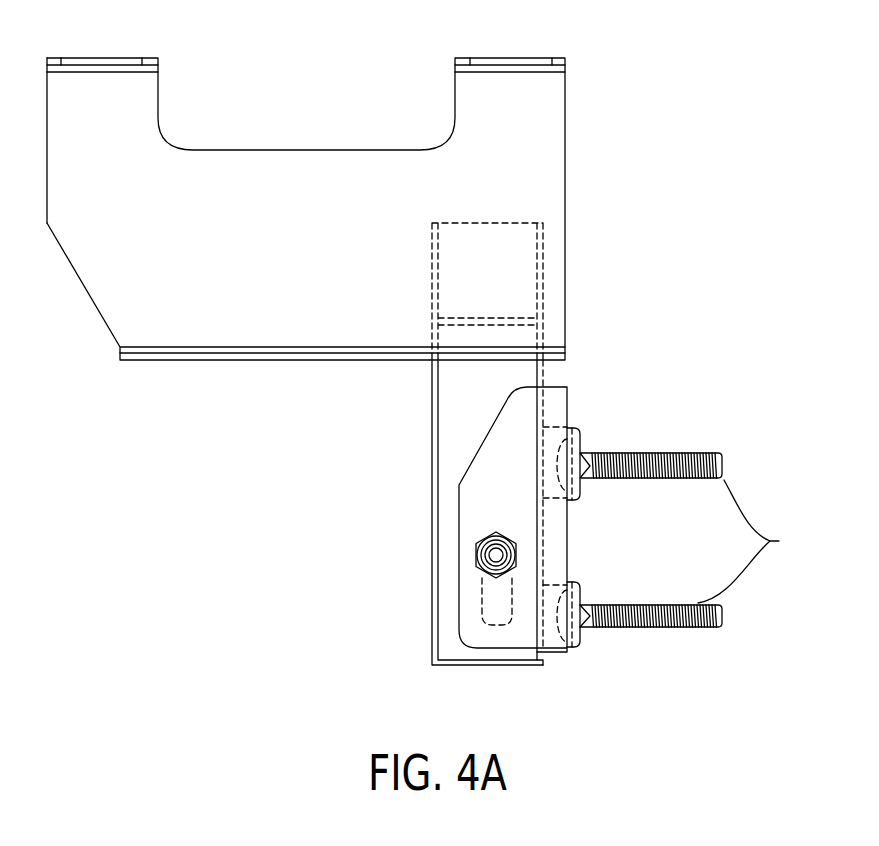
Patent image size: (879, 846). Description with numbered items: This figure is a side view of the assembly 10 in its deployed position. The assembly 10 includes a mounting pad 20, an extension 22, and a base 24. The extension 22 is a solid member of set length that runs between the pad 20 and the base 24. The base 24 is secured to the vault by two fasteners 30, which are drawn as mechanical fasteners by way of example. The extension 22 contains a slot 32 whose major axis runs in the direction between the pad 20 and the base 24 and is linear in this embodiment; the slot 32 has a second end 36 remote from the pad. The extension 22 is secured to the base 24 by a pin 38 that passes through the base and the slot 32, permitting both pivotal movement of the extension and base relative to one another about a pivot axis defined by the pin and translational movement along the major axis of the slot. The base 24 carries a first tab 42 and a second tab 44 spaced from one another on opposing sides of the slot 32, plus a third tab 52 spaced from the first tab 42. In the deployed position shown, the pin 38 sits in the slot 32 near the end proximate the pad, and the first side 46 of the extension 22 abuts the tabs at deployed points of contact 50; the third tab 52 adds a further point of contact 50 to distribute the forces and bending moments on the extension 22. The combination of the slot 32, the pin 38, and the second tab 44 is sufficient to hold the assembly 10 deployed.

The assembly 10 is at (258, 80).
The mounting pad 20 is at (108, 270).
The extension 22 is at (460, 388).
The base 24 is at (552, 403).
The fasteners 30 is at (678, 557).
The slot 32 is at (535, 568).
The second end 36 is at (582, 592).
The pin 38 is at (512, 550).
The first tab 42 is at (597, 456).
The second tab 44 is at (580, 648).
The first side 46 is at (545, 665).
The deployed points of contact 50 is at (521, 432).
The third tab 52 is at (567, 422).